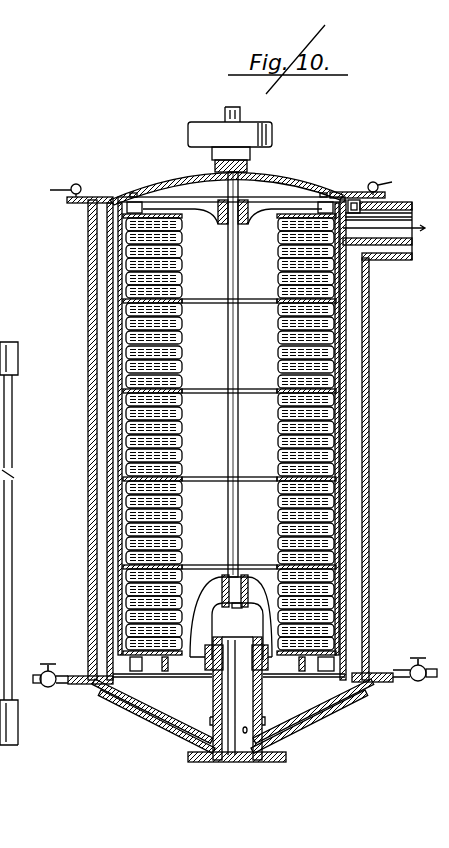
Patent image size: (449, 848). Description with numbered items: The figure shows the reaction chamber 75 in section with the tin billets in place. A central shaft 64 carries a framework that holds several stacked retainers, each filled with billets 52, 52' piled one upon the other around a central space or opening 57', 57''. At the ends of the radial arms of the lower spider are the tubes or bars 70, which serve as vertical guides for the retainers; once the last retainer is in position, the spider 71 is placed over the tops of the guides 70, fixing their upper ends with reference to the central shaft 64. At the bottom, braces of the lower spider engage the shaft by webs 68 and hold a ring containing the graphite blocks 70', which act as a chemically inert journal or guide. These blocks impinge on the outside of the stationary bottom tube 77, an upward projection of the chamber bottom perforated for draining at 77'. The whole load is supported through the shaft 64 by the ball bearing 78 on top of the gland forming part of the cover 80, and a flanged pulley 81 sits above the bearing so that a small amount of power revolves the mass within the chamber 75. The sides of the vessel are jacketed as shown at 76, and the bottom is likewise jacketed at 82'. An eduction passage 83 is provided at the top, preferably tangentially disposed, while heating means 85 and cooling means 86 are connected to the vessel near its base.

The flanged pulley 81 is at (270, 134).
The ball bearing 78 is at (256, 154).
The spider 71 is at (288, 191).
The cover 80 is at (114, 198).
The eduction passage 83 is at (415, 218).
The central shaft 64 is at (228, 268).
The tubes or bars 70 is at (124, 412).
The chamber 75 is at (350, 336).
The jacket 76 is at (371, 294).
The billets 52 is at (173, 434).
The filter packing right 52' is at (291, 434).
The central space or opening 57' is at (289, 434).
The separator plates left 57'' is at (200, 434).
The webs 68 is at (219, 618).
The graphite blocks 70' is at (223, 675).
The bottom tube 77 is at (237, 699).
The draining perforations 77' is at (153, 717).
The bottom jacket 82' is at (312, 716).
The cooling means 86 is at (53, 685).
The heating means 85 is at (420, 683).